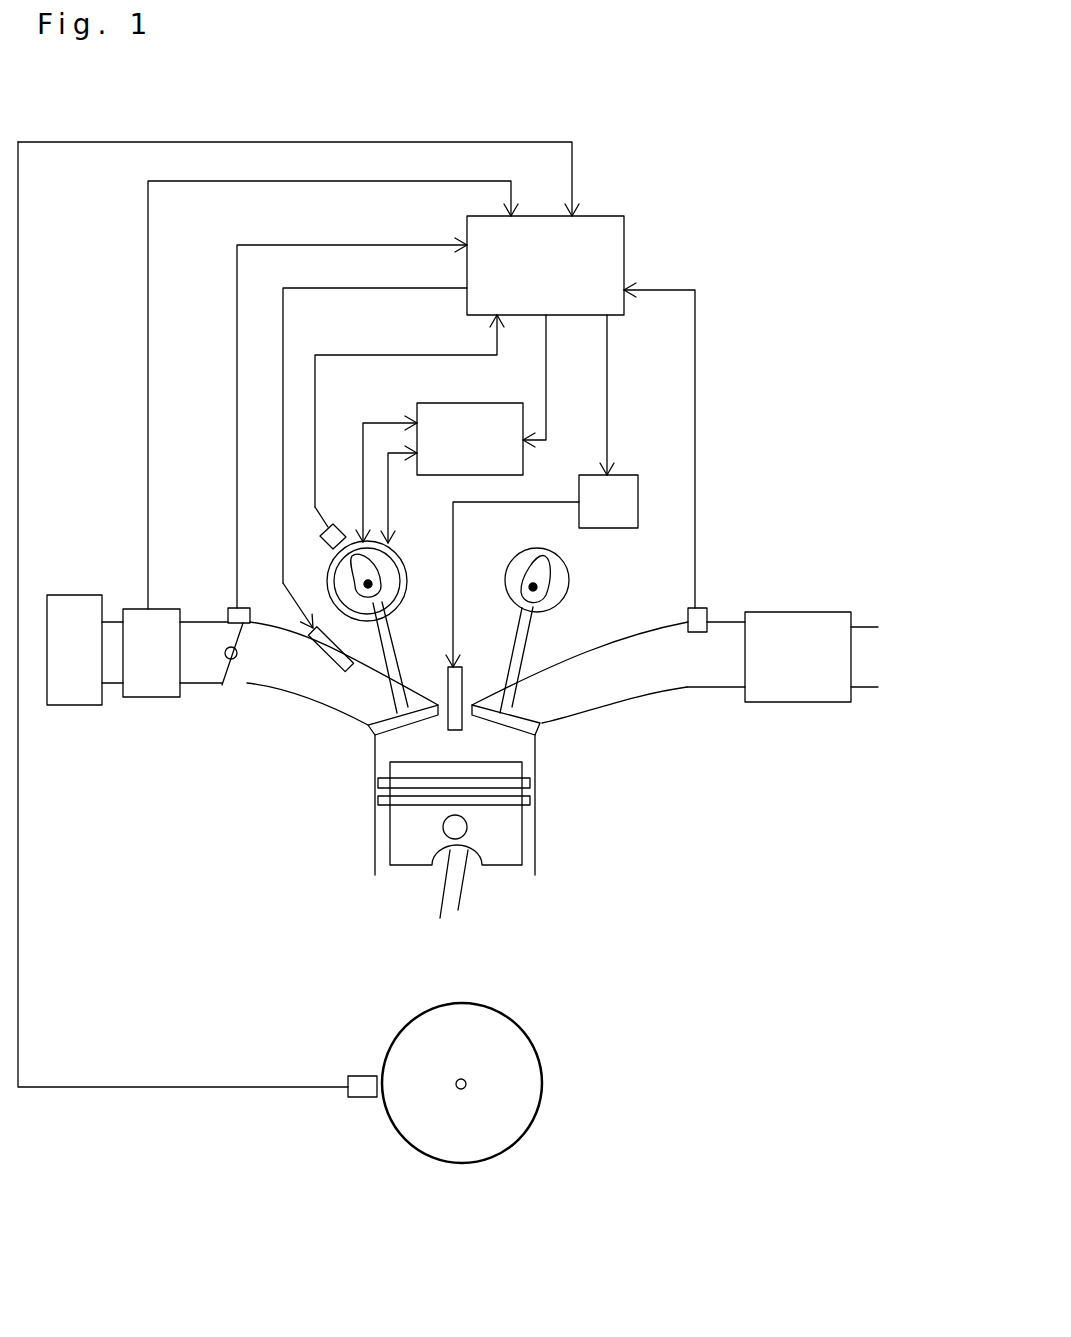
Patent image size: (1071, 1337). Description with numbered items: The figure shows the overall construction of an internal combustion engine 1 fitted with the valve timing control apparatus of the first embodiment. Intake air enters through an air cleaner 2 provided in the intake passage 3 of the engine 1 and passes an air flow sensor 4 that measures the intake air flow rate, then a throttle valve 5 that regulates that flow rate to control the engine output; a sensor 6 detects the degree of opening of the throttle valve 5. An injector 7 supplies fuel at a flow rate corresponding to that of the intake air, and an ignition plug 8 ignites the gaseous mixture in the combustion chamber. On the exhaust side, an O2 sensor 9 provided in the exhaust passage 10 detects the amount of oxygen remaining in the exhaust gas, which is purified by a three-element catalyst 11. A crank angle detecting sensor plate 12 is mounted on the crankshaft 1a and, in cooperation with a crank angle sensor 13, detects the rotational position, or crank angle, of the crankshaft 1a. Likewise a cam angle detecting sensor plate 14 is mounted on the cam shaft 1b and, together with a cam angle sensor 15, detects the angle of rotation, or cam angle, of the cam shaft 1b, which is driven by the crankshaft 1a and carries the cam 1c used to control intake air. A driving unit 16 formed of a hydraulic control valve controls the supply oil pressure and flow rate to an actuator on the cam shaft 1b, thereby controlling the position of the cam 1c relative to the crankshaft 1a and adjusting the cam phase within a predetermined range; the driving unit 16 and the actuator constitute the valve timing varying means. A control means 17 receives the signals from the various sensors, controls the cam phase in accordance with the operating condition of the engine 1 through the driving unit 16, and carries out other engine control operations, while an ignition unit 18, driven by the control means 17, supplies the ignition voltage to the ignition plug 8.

The internal combustion engine 1 is at (535, 837).
The crankshaft 1a is at (463, 1077).
The cam shaft 1b is at (378, 583).
The cam 1c is at (373, 572).
The air cleaner 2 is at (68, 705).
The intake passage 3 is at (303, 708).
The air flow sensor 4 is at (155, 697).
The throttle valve 5 is at (220, 670).
The sensor 6 is at (227, 610).
The injector 7 is at (315, 637).
The ignition plug 8 is at (465, 675).
The O2 sensor 9 is at (705, 608).
The exhaust passage 10 is at (638, 697).
The three-element catalyst 11 is at (798, 702).
The crank angle detecting sensor plate 12 is at (542, 1090).
The crank angle sensor 13 is at (358, 1076).
The cam angle detecting sensor plate 14 is at (398, 545).
The cam angle sensor 15 is at (326, 523).
The driving unit 16 is at (465, 403).
The control means 17 is at (624, 245).
The ignition unit 18 is at (628, 475).